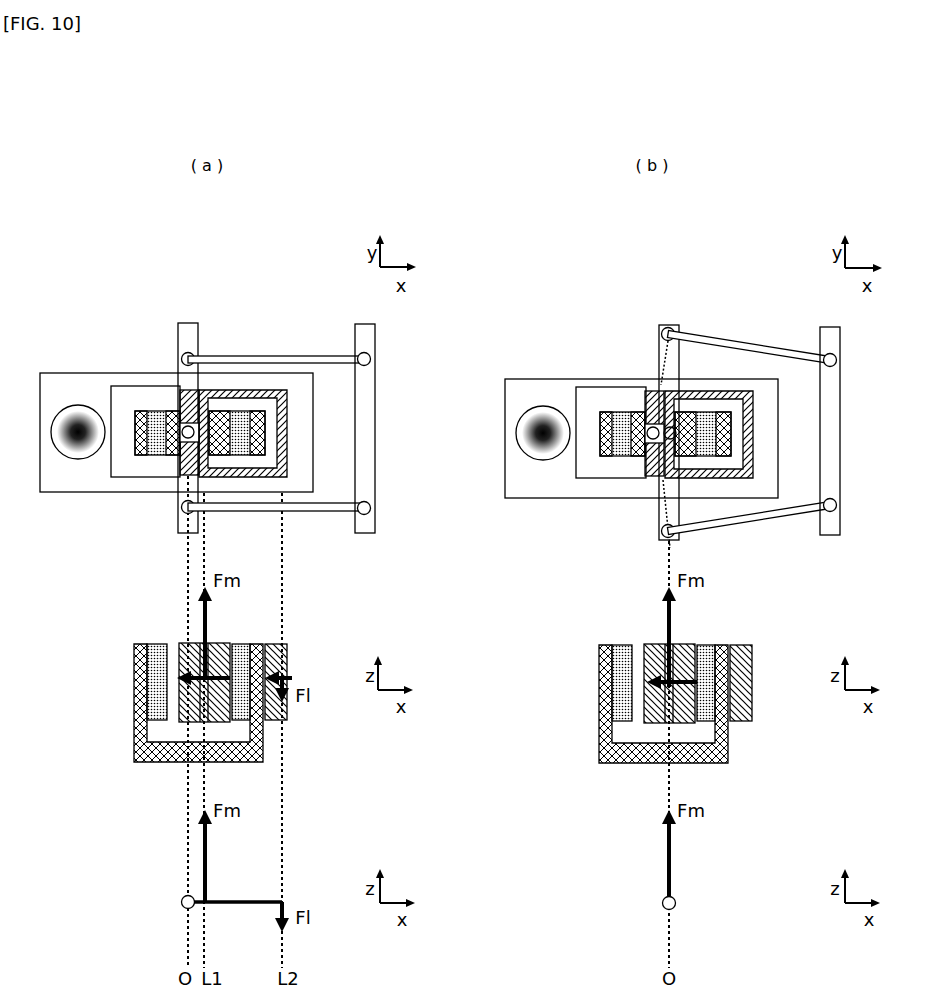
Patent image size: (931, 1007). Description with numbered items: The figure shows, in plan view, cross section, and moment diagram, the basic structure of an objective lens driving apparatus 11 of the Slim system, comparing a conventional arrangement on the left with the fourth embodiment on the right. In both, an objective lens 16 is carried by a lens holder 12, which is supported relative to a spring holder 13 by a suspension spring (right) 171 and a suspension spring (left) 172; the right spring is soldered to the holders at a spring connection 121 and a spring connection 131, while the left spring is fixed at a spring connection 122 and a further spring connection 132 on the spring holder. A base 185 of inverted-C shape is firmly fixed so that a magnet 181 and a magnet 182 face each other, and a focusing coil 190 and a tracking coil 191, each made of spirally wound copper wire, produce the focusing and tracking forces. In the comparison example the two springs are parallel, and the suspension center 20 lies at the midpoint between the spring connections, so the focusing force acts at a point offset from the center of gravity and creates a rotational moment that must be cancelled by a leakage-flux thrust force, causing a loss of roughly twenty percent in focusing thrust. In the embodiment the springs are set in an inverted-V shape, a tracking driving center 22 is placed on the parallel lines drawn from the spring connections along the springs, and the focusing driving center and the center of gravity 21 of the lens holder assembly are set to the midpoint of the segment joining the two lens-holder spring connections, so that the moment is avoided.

The objective lens driving apparatus 11 is at (57, 218).
The lens holder 12 is at (40, 373).
The spring holder 13 is at (377, 428).
The objective lens 16 is at (78, 405).
The suspension center 20 is at (178, 448).
The center of gravity of the lens holder assembly 21 is at (651, 452).
The tracking driving center 22 is at (643, 448).
The spring connection 121 is at (185, 323).
The spring connection 122 is at (185, 516).
The spring connection 131 is at (372, 358).
The lower hinge 132 is at (372, 507).
The suspension spring (right) 171 is at (229, 356).
The suspension spring (left) 172 is at (330, 503).
The magnet 181 is at (152, 411).
The magnet 182 is at (245, 411).
The base 185 is at (111, 386).
The focusing coil 190 is at (217, 390).
The tracking coil 191 is at (181, 390).